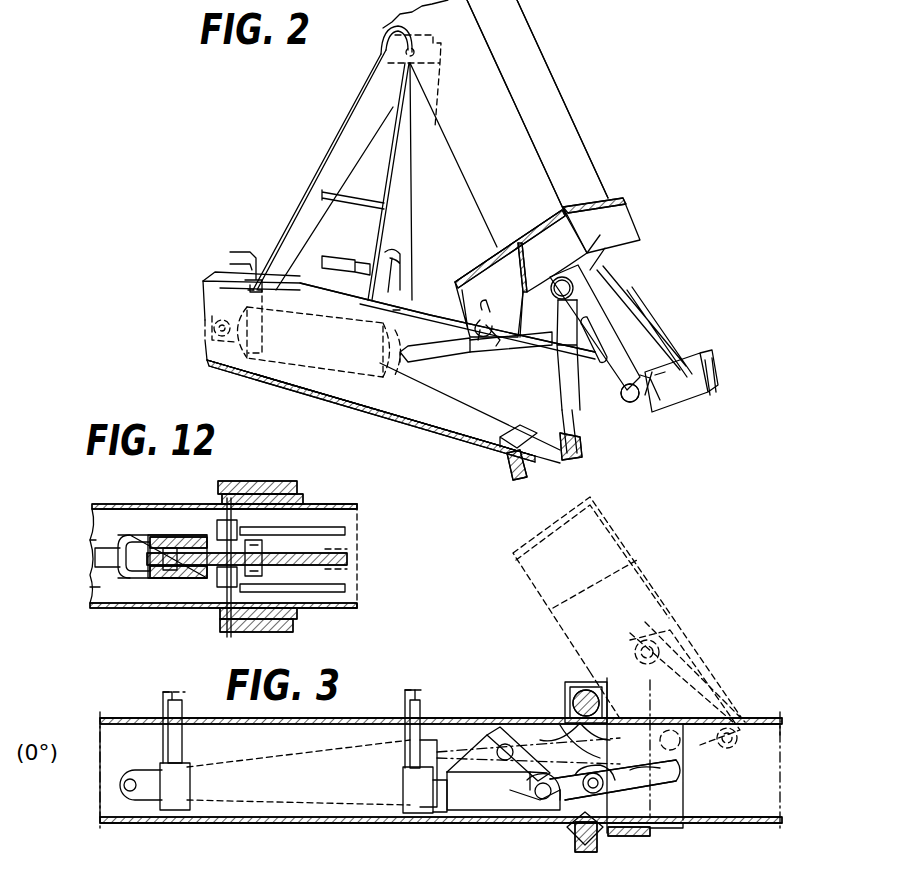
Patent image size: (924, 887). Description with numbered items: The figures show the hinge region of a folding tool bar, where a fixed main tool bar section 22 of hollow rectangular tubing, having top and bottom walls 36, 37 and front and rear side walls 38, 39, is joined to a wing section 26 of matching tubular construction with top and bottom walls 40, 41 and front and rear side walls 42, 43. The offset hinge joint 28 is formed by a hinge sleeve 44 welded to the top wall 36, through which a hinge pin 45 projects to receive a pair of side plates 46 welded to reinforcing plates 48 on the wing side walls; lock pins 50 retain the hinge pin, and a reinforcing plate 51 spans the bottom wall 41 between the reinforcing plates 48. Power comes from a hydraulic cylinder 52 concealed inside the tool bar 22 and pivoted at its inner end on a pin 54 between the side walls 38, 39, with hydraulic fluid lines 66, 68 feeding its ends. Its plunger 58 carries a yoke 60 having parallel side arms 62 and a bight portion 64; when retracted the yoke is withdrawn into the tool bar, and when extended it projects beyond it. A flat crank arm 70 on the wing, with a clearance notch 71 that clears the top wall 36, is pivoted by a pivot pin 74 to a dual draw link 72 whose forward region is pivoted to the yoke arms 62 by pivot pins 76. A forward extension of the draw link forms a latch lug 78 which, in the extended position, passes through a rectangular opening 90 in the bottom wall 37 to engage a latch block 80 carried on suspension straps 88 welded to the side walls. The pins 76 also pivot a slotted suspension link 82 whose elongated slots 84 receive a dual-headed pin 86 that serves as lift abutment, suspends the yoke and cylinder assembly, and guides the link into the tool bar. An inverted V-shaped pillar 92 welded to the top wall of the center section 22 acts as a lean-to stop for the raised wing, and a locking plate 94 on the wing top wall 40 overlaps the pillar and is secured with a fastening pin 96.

In FIG. 2, the main tool bar section 22 is at (215, 372).
In FIG. 12, the main tool bar section 22 is at (112, 506).
In FIG. 3, the main tool bar section 22 is at (235, 748).
In FIG. 2, the wing section 26 is at (592, 108).
In FIG. 12, the wing section 26 is at (371, 502).
In FIG. 3, the wing section 26 is at (645, 566).
In FIG. 2, the offset hinge joint 28 is at (712, 308).
In FIG. 3, the offset hinge joint 28 is at (560, 668).
In FIG. 2, the top wall 36 is at (433, 316).
In FIG. 3, the top wall 36 is at (330, 716).
In FIG. 2, the bottom wall 37 is at (466, 422).
In FIG. 12, the bottom wall 37 is at (93, 540).
In FIG. 3, the bottom wall 37 is at (376, 826).
In FIG. 2, the front side wall 38 is at (570, 414).
In FIG. 12, the front side wall 38 is at (150, 506).
In FIG. 3, the front side wall 38 is at (108, 746).
In FIG. 2, the rear side wall 39 is at (312, 385).
In FIG. 12, the rear side wall 39 is at (93, 588).
In FIG. 3, the top wall 40 is at (780, 745).
In FIG. 2, the bottom wall 41 is at (538, 95).
In FIG. 3, the bottom wall 41 is at (770, 812).
In FIG. 12, the front side wall 42 is at (346, 500).
In FIG. 3, the front side wall 42 is at (764, 774).
In FIG. 2, the rear side wall 43 is at (500, 78).
In FIG. 12, the rear side wall 43 is at (352, 614).
In FIG. 2, the hinge sleeve 44 is at (557, 272).
In FIG. 3, the hinge sleeve 44 is at (568, 688).
In FIG. 2, the hinge pin 45 is at (500, 372).
In FIG. 3, the hinge pin 45 is at (600, 690).
In FIG. 2, the side plates 46 is at (490, 260).
In FIG. 12, the side plates 46 is at (270, 490).
In FIG. 3, the side plates 46 is at (638, 700).
In FIG. 2, the reinforcing plates 48 is at (548, 208).
In FIG. 12, the reinforcing plates 48 is at (318, 478).
In FIG. 2, the lock pins 50 is at (496, 308).
In FIG. 2, the reinforcing plate 51 is at (612, 222).
In FIG. 3, the reinforcing plate 51 is at (640, 832).
In FIG. 2, the hydraulic cylinder 52 is at (275, 370).
In FIG. 3, the hydraulic cylinder 52 is at (260, 791).
In FIG. 2, the pin 54 is at (212, 326).
In FIG. 3, the pin 54 is at (124, 787).
In FIG. 2, the plunger 58 is at (455, 365).
In FIG. 12, the plunger 58 is at (98, 560).
In FIG. 3, the plunger 58 is at (440, 805).
In FIG. 2, the yoke 60 is at (554, 398).
In FIG. 12, the yoke 60 is at (118, 582).
In FIG. 3, the yoke 60 is at (493, 815).
In FIG. 2, the side arms 62 is at (640, 355).
In FIG. 12, the side arms 62 is at (150, 538).
In FIG. 3, the side arms 62 is at (472, 803).
In FIG. 12, the bight portion 64 is at (116, 536).
In FIG. 2, the hydraulic fluid line 66 is at (254, 254).
In FIG. 3, the hydraulic fluid line 66 is at (166, 708).
In FIG. 2, the hydraulic fluid line 68 is at (365, 258).
In FIG. 3, the hydraulic fluid line 68 is at (405, 712).
In FIG. 2, the crank arm 70 is at (590, 275).
In FIG. 12, the crank arm 70 is at (352, 558).
In FIG. 3, the crank arm 70 is at (497, 728).
In FIG. 3, the clearance notch 71 is at (563, 713).
In FIG. 2, the dual draw link 72 is at (668, 368).
In FIG. 12, the dual draw link 72 is at (195, 540).
In FIG. 3, the dual draw link 72 is at (524, 730).
In FIG. 12, the pivot pin 74 is at (170, 572).
In FIG. 3, the pivot pin 74 is at (500, 746).
In FIG. 2, the pivot pins 76 is at (632, 402).
In FIG. 12, the pivot pins 76 is at (232, 478).
In FIG. 3, the pivot pins 76 is at (728, 726).
In FIG. 2, the latch lug 78 is at (700, 408).
In FIG. 3, the latch lug 78 is at (575, 838).
In FIG. 2, the latch block 80 is at (514, 478).
In FIG. 3, the latch block 80 is at (590, 852).
In FIG. 2, the suspension link 82 is at (615, 320).
In FIG. 12, the suspension link 82 is at (348, 530).
In FIG. 3, the suspension link 82 is at (690, 660).
In FIG. 2, the elongated slots 84 is at (625, 335).
In FIG. 3, the elongated slots 84 is at (676, 790).
In FIG. 2, the dual-headed pin 86 is at (566, 278).
In FIG. 12, the dual-headed pin 86 is at (270, 544).
In FIG. 3, the dual-headed pin 86 is at (660, 642).
In FIG. 2, the suspension straps 88 is at (577, 455).
In FIG. 12, the suspension straps 88 is at (252, 492).
In FIG. 3, the suspension straps 88 is at (605, 838).
In FIG. 2, the rectangular opening 90 is at (505, 440).
In FIG. 3, the rectangular opening 90 is at (555, 810).
In FIG. 2, the inverted V-shaped pillar 92 is at (320, 156).
In FIG. 2, the locking plate 94 is at (384, 46).
In FIG. 2, the fastening pin 96 is at (442, 54).